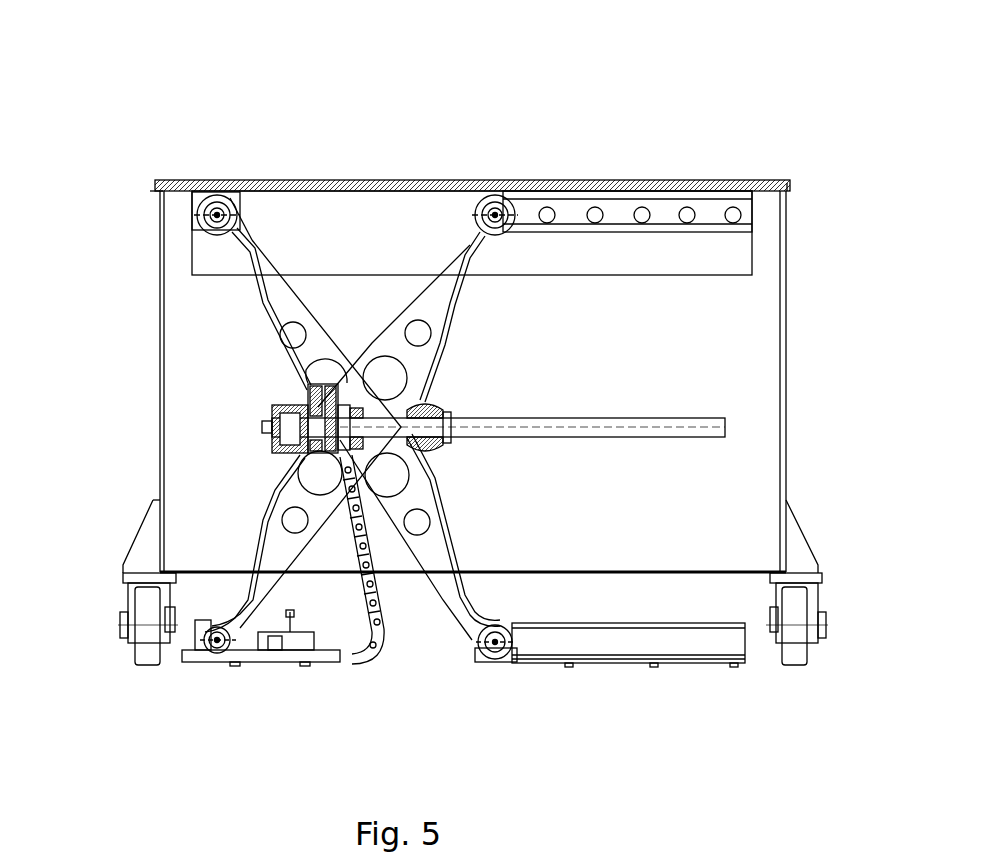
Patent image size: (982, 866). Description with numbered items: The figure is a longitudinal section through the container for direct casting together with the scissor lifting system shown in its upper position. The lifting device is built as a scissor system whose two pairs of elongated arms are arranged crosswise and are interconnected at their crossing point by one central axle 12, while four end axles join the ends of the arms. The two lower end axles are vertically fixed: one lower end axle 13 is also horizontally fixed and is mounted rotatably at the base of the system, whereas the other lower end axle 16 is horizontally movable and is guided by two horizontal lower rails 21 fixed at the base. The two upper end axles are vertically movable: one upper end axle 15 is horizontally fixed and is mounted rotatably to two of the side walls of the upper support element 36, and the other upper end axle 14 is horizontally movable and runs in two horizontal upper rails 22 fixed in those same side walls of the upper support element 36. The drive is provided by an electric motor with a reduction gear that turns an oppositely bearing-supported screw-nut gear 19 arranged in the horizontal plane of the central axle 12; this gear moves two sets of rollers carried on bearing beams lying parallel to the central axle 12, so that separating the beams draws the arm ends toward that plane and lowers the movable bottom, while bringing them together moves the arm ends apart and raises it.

The central axle 12 is at (357, 418).
The lower end axle 13 is at (217, 640).
The upper end axle 14 is at (495, 215).
The upper end axle 15 is at (217, 215).
The lower end axle 16 is at (495, 642).
The screw-nut gear 19 is at (427, 421).
The lower rail 21 is at (630, 637).
The upper rail 22 is at (710, 215).
The upper support element 36 is at (610, 253).